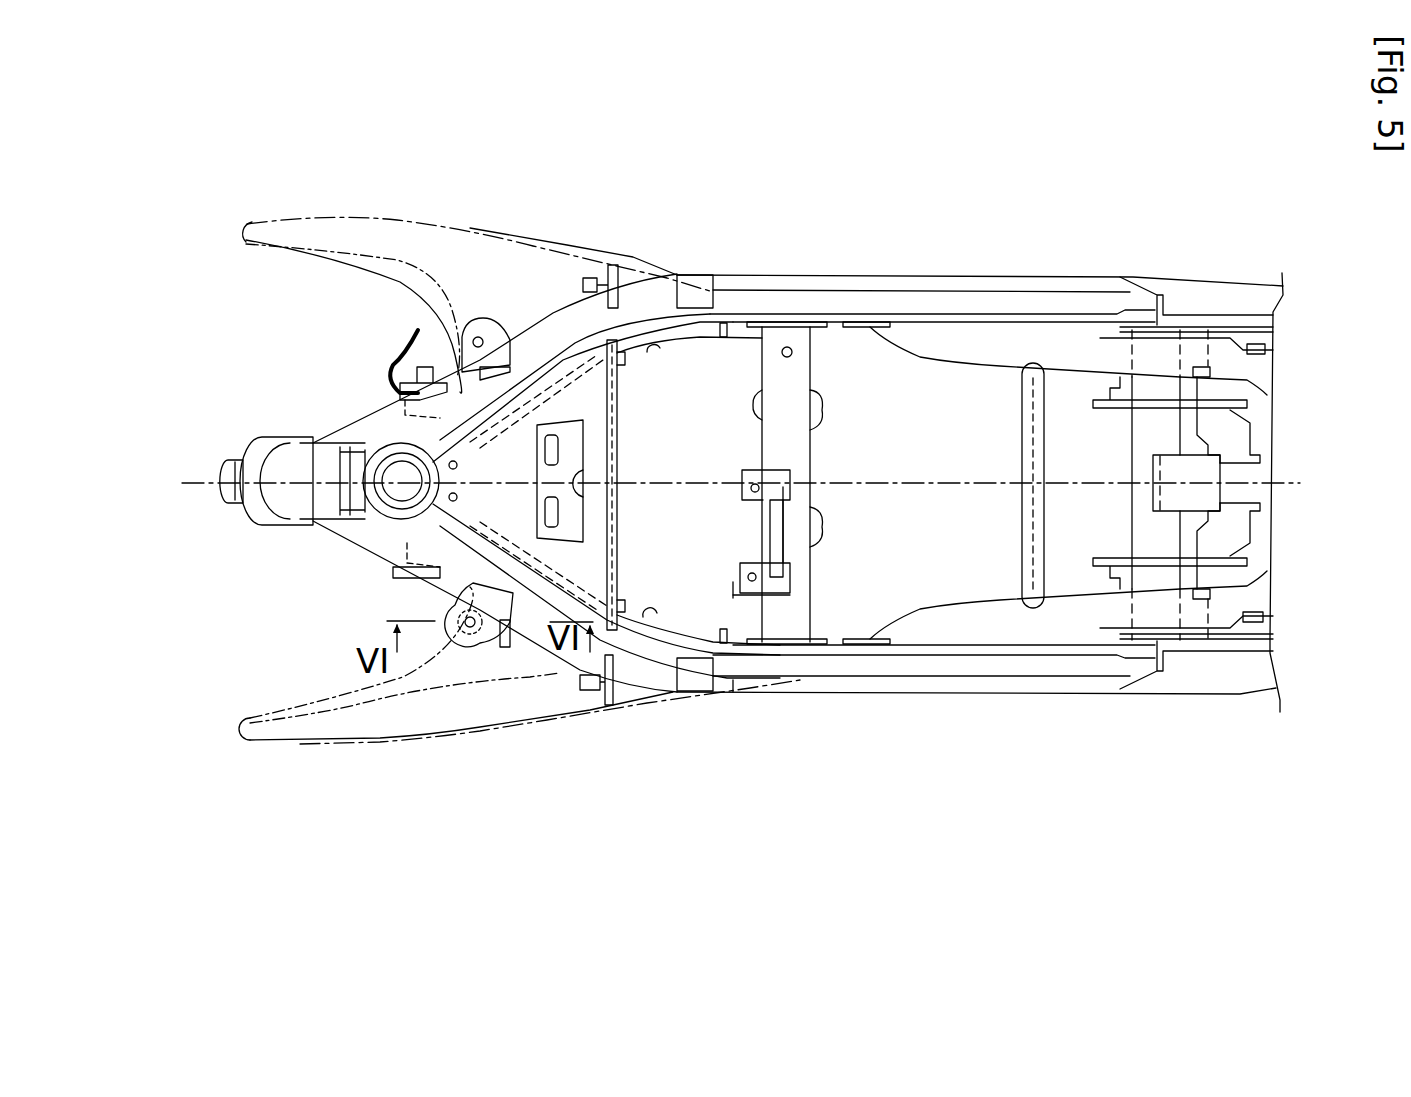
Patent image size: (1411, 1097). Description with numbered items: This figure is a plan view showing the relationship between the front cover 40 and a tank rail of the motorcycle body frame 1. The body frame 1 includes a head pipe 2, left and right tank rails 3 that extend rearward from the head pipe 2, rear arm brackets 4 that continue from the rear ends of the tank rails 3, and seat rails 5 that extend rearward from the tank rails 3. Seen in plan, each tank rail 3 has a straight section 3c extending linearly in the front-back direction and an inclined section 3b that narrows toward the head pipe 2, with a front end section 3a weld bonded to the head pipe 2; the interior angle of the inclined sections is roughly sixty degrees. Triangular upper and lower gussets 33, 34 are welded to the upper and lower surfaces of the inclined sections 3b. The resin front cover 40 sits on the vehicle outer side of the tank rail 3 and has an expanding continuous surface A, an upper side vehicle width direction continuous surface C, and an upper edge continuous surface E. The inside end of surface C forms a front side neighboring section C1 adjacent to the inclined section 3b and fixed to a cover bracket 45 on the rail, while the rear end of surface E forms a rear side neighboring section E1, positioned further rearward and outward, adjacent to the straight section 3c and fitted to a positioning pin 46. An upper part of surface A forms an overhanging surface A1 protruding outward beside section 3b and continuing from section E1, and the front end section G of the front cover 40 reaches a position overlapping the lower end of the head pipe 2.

The body frame 1 is at (937, 222).
The head pipe 2 is at (290, 432).
The tank rail 3 is at (808, 272).
The front end section 3a is at (345, 432).
The inclined section 3b is at (533, 318).
The straight section 3c is at (767, 683).
The rear arm bracket 4 is at (1222, 265).
The seat rail 5 is at (1267, 395).
The upper gusset 33 is at (568, 352).
The lower gusset 34 is at (632, 458).
The front cover 40 is at (362, 222).
The cover bracket 45 is at (463, 317).
The positioning pin 46 is at (604, 262).
The expanding continuous surface A is at (410, 233).
The overhanging surface A1 is at (581, 252).
The upper side vehicle width direction continuous surface C is at (437, 673).
The front side neighboring section C1 is at (487, 580).
The upper edge continuous surface E is at (613, 572).
The rear side neighboring section E1 is at (637, 683).
The front end section G is at (240, 720).